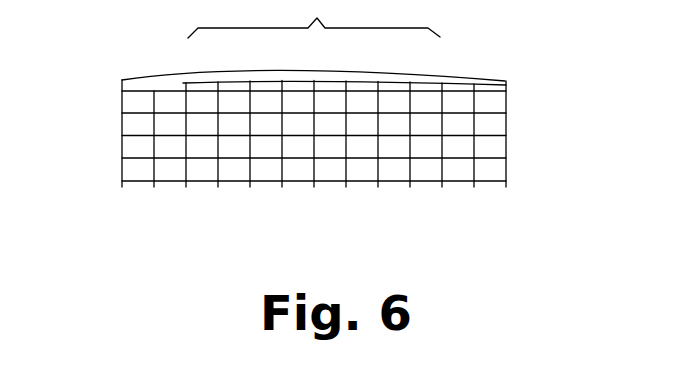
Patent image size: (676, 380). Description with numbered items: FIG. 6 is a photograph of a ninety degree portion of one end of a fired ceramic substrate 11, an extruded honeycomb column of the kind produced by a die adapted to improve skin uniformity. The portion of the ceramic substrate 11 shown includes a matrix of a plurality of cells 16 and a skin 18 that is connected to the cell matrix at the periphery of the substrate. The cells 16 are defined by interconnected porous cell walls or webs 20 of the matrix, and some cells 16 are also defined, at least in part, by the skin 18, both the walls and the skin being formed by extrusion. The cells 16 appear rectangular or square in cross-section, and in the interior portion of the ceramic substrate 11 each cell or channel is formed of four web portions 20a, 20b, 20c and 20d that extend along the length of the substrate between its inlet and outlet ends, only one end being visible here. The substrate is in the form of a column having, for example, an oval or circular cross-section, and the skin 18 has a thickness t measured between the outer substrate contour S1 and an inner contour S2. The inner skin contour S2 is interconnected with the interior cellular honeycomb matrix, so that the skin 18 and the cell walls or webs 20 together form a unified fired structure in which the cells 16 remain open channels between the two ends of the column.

The ceramic substrate 11 is at (572, 143).
The cells 16 is at (457, 124).
The skin 18 is at (181, 82).
The cell walls or webs 20 is at (290, 127).
The web portion 20a is at (377, 147).
The web portion 20b is at (395, 132).
The web portion 20c is at (410, 146).
The web portion 20d is at (392, 160).
The outer substrate contour S1 is at (233, 72).
The inner contour S2 is at (237, 84).
The thickness t is at (208, 103).